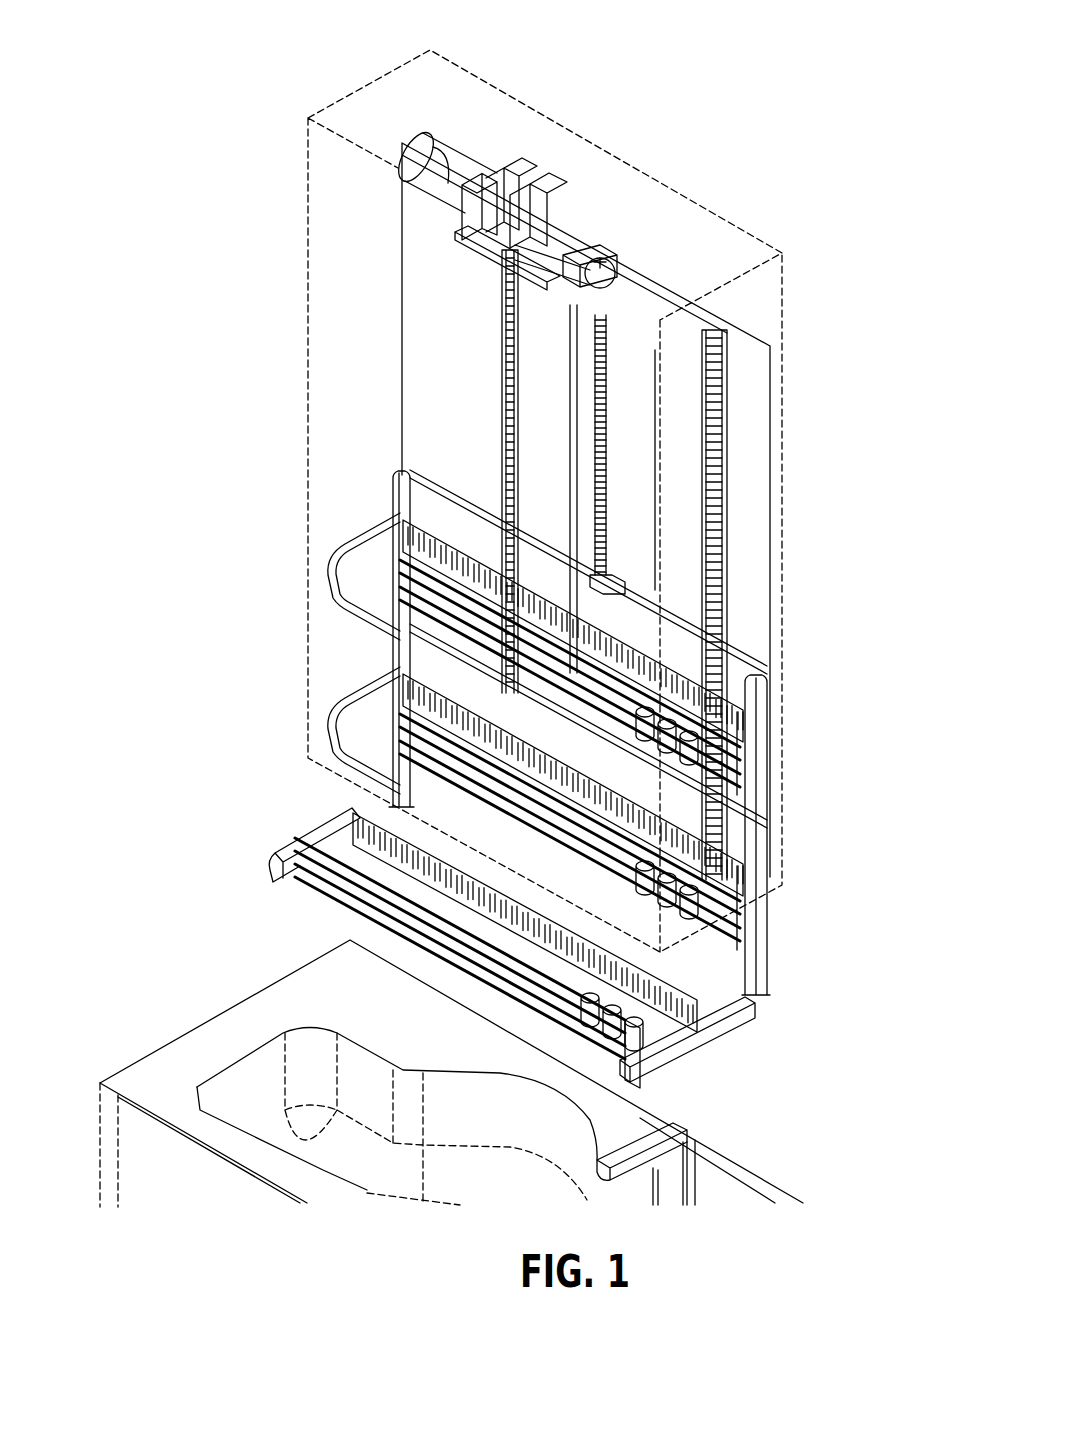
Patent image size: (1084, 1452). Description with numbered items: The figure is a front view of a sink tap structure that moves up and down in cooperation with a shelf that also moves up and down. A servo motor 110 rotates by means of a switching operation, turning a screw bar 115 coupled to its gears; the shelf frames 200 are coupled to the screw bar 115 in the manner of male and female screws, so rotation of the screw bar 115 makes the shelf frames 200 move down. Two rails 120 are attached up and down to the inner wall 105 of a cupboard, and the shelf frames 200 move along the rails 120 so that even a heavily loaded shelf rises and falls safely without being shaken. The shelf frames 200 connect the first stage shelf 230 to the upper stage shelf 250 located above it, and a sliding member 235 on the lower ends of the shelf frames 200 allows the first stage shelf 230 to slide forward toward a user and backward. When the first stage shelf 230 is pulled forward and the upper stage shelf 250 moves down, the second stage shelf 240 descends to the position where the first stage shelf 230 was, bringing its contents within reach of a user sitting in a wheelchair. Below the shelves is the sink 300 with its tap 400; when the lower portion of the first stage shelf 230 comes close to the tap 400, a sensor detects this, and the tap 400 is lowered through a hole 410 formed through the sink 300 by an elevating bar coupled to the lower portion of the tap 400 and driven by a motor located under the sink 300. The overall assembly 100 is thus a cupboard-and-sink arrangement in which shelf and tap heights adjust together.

The housing body 100 is at (782, 522).
The inner wall 105 is at (757, 570).
The servo motor 110 is at (397, 163).
The screw bar 115 is at (605, 385).
The rails 120 is at (500, 333).
The shelf frames 200 is at (393, 484).
The first stage shelf 230 is at (760, 998).
The sliding member 235 is at (700, 1040).
The second stage shelf 240 is at (755, 891).
The upper stage shelf 250 is at (760, 773).
The sink 300 is at (245, 1077).
The tap 400 is at (673, 1123).
The hole 410 is at (713, 1190).